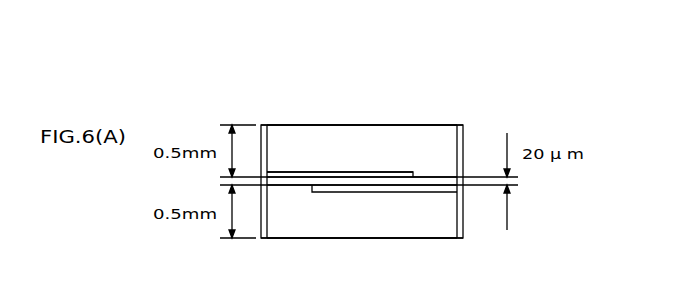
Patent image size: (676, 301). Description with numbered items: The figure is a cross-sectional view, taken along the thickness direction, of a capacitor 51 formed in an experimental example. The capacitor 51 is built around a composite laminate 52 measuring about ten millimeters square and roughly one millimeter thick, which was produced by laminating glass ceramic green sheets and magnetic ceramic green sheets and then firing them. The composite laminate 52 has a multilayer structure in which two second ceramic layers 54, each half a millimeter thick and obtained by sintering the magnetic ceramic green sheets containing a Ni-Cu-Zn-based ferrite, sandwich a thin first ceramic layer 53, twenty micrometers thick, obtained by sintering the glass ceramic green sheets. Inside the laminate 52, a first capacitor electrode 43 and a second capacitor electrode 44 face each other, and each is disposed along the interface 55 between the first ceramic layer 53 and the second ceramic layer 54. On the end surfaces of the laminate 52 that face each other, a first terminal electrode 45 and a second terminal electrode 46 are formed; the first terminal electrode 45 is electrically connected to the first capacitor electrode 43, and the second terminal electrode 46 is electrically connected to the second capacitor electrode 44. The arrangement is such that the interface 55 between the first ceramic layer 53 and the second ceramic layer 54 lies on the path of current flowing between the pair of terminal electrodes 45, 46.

The capacitor 51 is at (312, 28).
The first terminal electrode 45 is at (262, 124).
The second terminal electrode 46 is at (459, 127).
The first capacitor electrode 43 is at (353, 172).
The second capacitor electrode 44 is at (350, 192).
The composite laminate 52 is at (421, 124).
The first ceramic layer 53 is at (303, 180).
The second ceramic layer 54 is at (450, 143).
The interface 55 is at (437, 170).